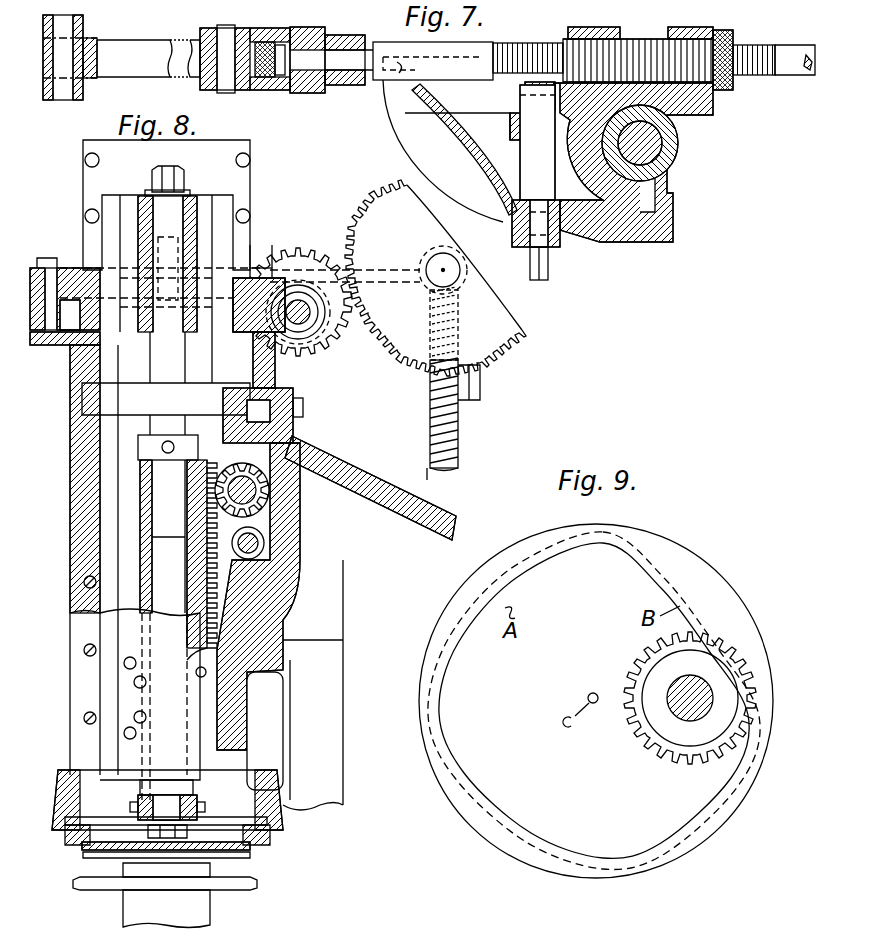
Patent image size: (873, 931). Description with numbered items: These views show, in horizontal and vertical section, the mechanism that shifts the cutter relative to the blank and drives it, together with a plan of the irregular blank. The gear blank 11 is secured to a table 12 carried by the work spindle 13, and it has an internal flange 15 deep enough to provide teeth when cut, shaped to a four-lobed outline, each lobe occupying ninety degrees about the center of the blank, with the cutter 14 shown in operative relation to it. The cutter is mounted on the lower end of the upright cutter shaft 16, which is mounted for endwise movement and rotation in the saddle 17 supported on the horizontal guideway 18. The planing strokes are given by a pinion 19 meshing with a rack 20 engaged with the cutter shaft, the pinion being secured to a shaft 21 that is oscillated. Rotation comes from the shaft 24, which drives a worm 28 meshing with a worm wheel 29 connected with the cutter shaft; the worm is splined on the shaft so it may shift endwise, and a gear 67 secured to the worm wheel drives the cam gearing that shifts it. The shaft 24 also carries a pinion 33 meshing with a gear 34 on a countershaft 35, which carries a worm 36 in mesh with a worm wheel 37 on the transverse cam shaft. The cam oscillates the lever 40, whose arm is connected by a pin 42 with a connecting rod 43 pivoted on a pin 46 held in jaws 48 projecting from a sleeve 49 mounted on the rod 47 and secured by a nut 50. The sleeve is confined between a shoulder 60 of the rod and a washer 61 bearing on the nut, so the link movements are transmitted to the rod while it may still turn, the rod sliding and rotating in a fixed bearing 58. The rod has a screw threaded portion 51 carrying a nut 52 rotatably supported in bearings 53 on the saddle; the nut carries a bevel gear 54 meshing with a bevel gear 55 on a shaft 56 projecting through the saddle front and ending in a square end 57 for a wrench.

In FIG. 8, the gear blank 11 is at (278, 796).
In FIG. 9, the gear blank 11 is at (700, 562).
In FIG. 8, the table 12 is at (252, 851).
In FIG. 8, the spindle 13 is at (212, 866).
In FIG. 8, the cutter 14 is at (205, 813).
In FIG. 9, the cutter 14 is at (652, 746).
In FIG. 8, the internal flange 15 is at (248, 778).
In FIG. 9, the internal flange 15 is at (656, 569).
In FIG. 7, the cutter shaft 16 is at (648, 146).
In FIG. 8, the cutter shaft 16 is at (194, 788).
In FIG. 9, the cutter shaft 16 is at (688, 702).
In FIG. 7, the saddle 17 is at (612, 240).
In FIG. 8, the horizontal guideway 18 is at (290, 452).
In FIG. 8, the pinion 19 is at (272, 493).
In FIG. 8, the rack 20 is at (283, 585).
In FIG. 8, the shaft 21 is at (265, 488).
In FIG. 8, the shaft 24 is at (310, 308).
In FIG. 8, the worm 28 is at (300, 299).
In FIG. 8, the worm wheel 29 is at (266, 262).
In FIG. 8, the pinion 33 is at (318, 262).
In FIG. 8, the gear 34 is at (369, 220).
In FIG. 8, the countershaft 35 is at (430, 258).
In FIG. 8, the worm 36 is at (428, 291).
In FIG. 8, the worm wheel 37 is at (458, 428).
In FIG. 7, the lever 40 is at (73, 27).
In FIG. 7, the pin 42 is at (75, 55).
In FIG. 7, the connecting rod 43 is at (148, 41).
In FIG. 7, the pin 46 is at (228, 93).
In FIG. 7, the rod 47 is at (400, 64).
In FIG. 8, the rod 47 is at (265, 547).
In FIG. 7, the jaws 48 is at (245, 30).
In FIG. 7, the sleeve 49 is at (356, 36).
In FIG. 7, the nut 50 is at (263, 90).
In FIG. 7, the screw threaded portion 51 is at (520, 43).
In FIG. 7, the nut 52 is at (690, 28).
In FIG. 7, the bearings 53 is at (622, 33).
In FIG. 7, the bevel gear 54 is at (592, 28).
In FIG. 7, the bevel gear 55 is at (525, 92).
In FIG. 7, the shaft 56 is at (530, 228).
In FIG. 7, the square end 57 is at (548, 268).
In FIG. 7, the fixed bearing 58 is at (320, 28).
In FIG. 7, the shoulder 60 is at (393, 66).
In FIG. 7, the washer 61 is at (282, 92).
In FIG. 8, the gear 67 is at (68, 262).